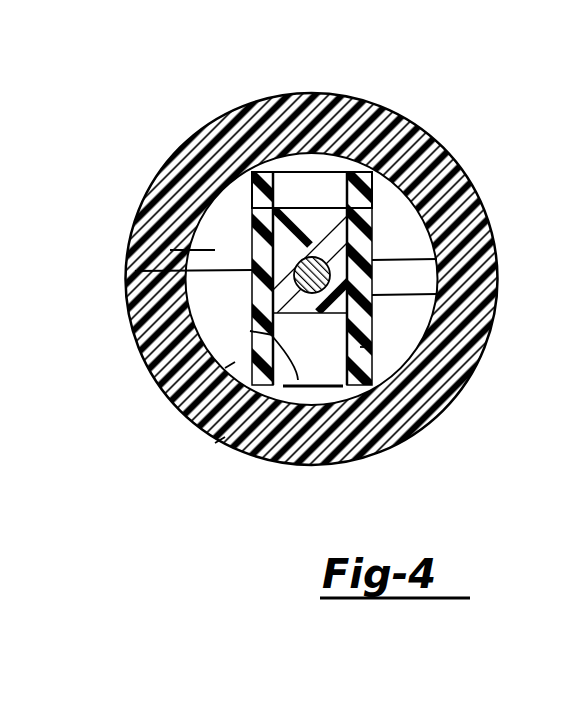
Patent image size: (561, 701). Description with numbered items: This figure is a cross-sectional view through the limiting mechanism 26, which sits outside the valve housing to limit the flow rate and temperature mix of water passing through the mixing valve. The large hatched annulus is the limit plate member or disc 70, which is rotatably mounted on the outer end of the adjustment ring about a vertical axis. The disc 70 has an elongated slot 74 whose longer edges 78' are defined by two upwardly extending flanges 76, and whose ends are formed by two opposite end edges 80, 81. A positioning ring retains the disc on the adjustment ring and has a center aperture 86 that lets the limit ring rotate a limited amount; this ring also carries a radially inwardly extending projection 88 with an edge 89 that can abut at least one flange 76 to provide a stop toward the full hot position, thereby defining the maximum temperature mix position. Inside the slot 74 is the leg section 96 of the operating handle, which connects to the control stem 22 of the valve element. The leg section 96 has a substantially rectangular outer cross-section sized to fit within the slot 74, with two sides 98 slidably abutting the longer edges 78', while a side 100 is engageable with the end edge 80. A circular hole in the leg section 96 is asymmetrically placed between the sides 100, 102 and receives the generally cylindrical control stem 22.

The limiting mechanism 26 is at (205, 116).
The limit plate member or disc 70 is at (418, 237).
The side 100 is at (368, 168).
The end edge 80 is at (311, 215).
The edge 89 is at (258, 190).
The leg section 96 is at (313, 205).
The center aperture 86 is at (411, 229).
The elongated slot 74 is at (343, 385).
The longer edges of slot 78' is at (277, 431).
The radially inwardly extending projection 88 is at (228, 232).
The sides 98 is at (135, 271).
The control stem 22 is at (437, 294).
The upwardly extending flanges 76 is at (360, 347).
The side 102 is at (225, 368).
The end edge 81 is at (215, 443).